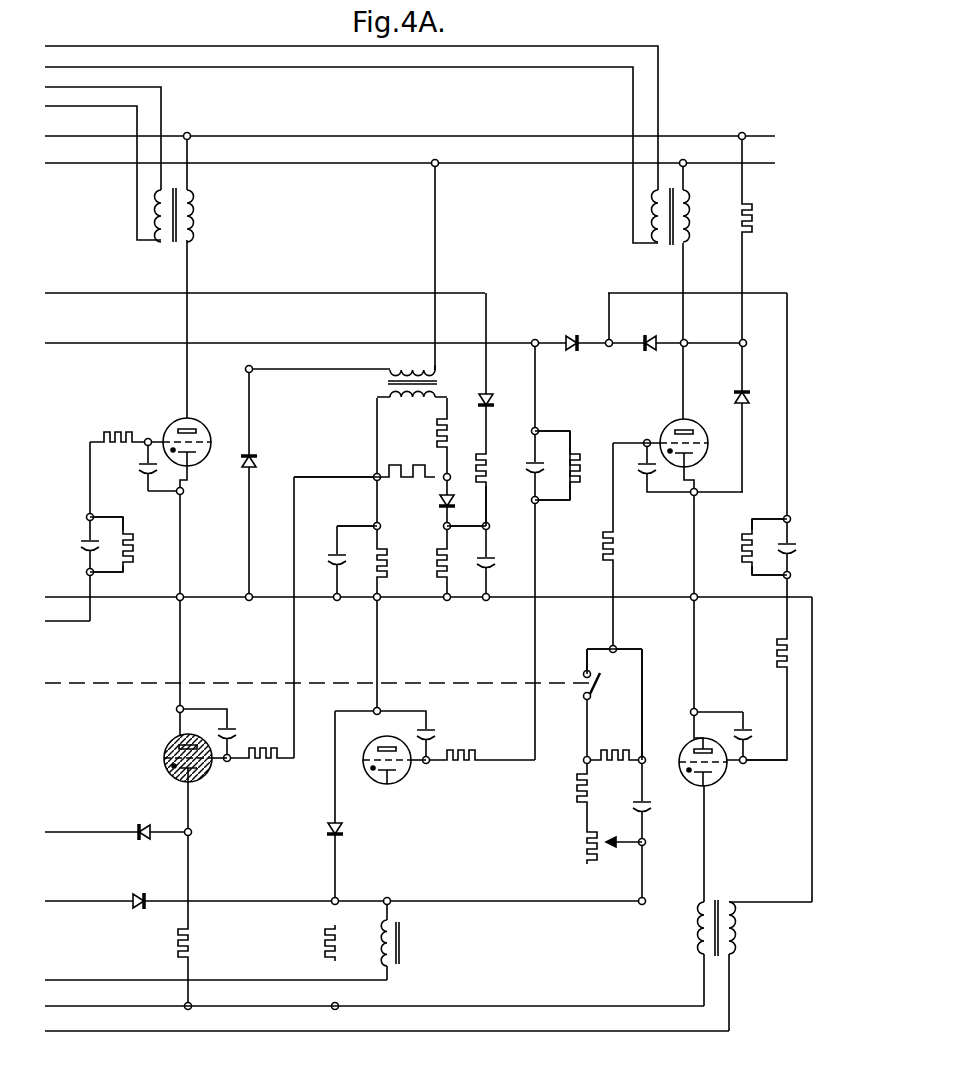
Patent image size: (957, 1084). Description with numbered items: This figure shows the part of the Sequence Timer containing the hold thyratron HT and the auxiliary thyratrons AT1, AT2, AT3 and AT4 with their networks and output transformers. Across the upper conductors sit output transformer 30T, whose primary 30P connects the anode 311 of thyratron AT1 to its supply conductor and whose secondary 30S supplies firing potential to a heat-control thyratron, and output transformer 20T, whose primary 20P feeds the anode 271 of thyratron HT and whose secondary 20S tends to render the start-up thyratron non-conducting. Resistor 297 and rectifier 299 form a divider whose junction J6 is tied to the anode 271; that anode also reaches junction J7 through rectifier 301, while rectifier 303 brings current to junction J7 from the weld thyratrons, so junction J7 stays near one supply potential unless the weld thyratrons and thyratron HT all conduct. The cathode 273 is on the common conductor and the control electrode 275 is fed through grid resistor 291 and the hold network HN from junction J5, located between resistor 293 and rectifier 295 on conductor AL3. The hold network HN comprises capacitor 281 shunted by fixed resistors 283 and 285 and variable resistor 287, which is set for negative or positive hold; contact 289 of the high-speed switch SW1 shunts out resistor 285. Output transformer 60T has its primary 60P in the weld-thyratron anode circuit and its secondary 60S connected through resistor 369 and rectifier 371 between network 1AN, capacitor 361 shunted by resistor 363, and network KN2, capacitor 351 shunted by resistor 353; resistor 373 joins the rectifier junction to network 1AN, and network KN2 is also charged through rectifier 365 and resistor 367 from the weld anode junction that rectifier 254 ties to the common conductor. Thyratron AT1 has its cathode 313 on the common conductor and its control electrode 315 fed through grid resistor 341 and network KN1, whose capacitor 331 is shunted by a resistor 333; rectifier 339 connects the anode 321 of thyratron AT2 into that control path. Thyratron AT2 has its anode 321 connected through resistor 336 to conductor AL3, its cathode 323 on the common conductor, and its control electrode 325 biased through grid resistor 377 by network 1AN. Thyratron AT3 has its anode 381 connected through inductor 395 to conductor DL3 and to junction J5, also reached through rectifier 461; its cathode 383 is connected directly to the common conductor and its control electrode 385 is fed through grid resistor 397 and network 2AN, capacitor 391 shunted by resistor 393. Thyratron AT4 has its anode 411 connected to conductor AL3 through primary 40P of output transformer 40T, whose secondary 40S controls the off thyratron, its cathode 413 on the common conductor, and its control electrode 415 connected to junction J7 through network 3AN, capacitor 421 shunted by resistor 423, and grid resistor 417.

The secondary 30S is at (153, 212).
The primary 30P is at (195, 216).
The transformer 30T is at (173, 243).
The secondary 20S is at (651, 214).
The primary 20P is at (688, 212).
The output transformer 20T is at (668, 246).
The resistor 297 is at (753, 218).
The rectifier 303 is at (574, 333).
The rectifier 301 is at (654, 333).
The junction J7 is at (610, 347).
The junction J6 is at (746, 344).
The rectifier 299 is at (747, 394).
The primary 60P is at (396, 358).
The output transformer 60T is at (434, 385).
The secondary 60S is at (430, 400).
The rectifier 365 is at (488, 393).
The resistor 369 is at (438, 430).
The capacitor 391 is at (518, 448).
The resistor 373 is at (425, 478).
The rectifier 371 is at (440, 504).
The resistor 367 is at (506, 505).
The capacitor 361 is at (334, 556).
The resistor 363 is at (386, 563).
The resistor 353 is at (437, 578).
The capacitor 351 is at (490, 560).
The auxiliary network 2AN is at (580, 426).
The resistor 393 is at (576, 486).
The auxiliary thyratron AT1 is at (200, 421).
The anode 311 is at (183, 426).
The control electrode 315 is at (170, 440).
The cathode 313 is at (189, 463).
The grid resistor 341 is at (106, 428).
The rectifier 254 is at (253, 464).
The network KN1 is at (133, 511).
The capacitor 331 is at (86, 549).
The resistor 333 is at (140, 556).
The hold thyratron HT is at (695, 421).
The anode 271 is at (681, 425).
The control electrode 275 is at (665, 441).
The cathode 273 is at (692, 458).
The auxiliary network 3AN is at (781, 514).
The resistor 423 is at (742, 546).
The capacitor 421 is at (790, 548).
The grid resistor 291 is at (615, 561).
The auxiliary network 1AN is at (367, 627).
The network KN2 is at (485, 627).
The switch SW1 is at (432, 686).
The contact 289 is at (610, 685).
The grid resistor 417 is at (778, 652).
The auxiliary thyratron AT2 is at (201, 779).
The cathode 323 is at (176, 741).
The control electrode 325 is at (165, 756).
The anode 321 is at (178, 783).
The grid resistor 377 is at (247, 752).
The rectifier 339 is at (140, 838).
The rectifier 461 is at (137, 897).
The resistor 336 is at (192, 935).
The resistor 293 is at (328, 940).
The conductor DL3 is at (111, 984).
The junction J5 is at (332, 900).
The conductor AL3 is at (495, 1011).
The auxiliary thyratron AT3 is at (368, 782).
The cathode 383 is at (378, 745).
The control electrode 385 is at (405, 766).
The anode 381 is at (392, 785).
The grid resistor 397 is at (462, 755).
The rectifier 295 is at (331, 832).
The inductor 395 is at (402, 935).
The fixed resistor 285 is at (601, 752).
The hold network HN is at (630, 794).
The fixed resistor 283 is at (578, 790).
The variable resistor 287 is at (585, 851).
The capacitor 281 is at (646, 809).
The auxiliary thyratron AT4 is at (685, 746).
The cathode 413 is at (704, 747).
The control electrode 415 is at (724, 763).
The anode 411 is at (709, 781).
The output transformer 40T is at (716, 905).
The primary 40P is at (702, 940).
The secondary 40S is at (735, 940).